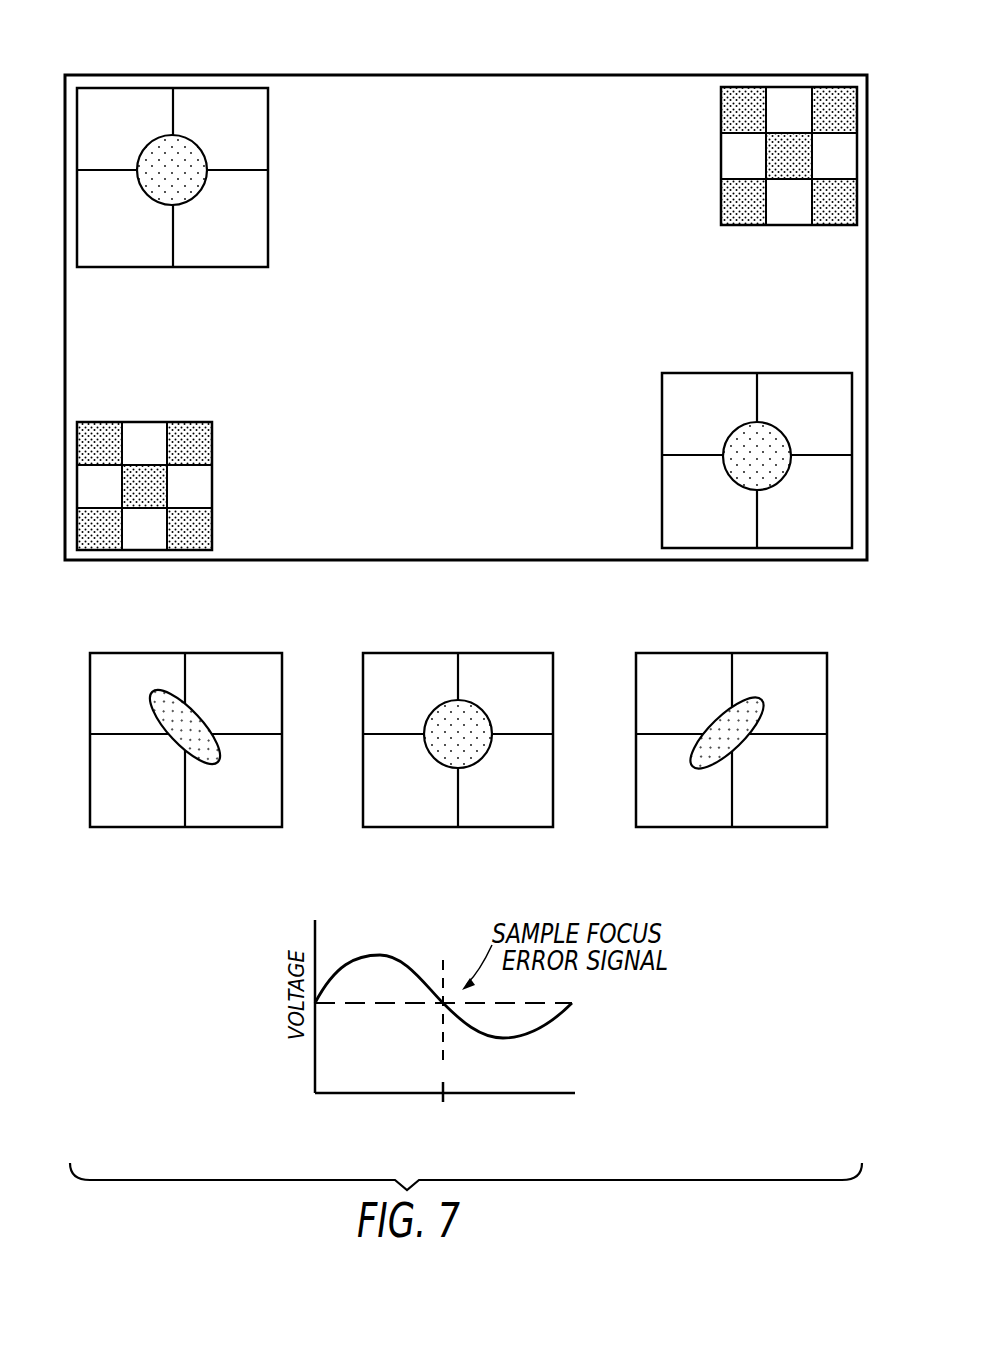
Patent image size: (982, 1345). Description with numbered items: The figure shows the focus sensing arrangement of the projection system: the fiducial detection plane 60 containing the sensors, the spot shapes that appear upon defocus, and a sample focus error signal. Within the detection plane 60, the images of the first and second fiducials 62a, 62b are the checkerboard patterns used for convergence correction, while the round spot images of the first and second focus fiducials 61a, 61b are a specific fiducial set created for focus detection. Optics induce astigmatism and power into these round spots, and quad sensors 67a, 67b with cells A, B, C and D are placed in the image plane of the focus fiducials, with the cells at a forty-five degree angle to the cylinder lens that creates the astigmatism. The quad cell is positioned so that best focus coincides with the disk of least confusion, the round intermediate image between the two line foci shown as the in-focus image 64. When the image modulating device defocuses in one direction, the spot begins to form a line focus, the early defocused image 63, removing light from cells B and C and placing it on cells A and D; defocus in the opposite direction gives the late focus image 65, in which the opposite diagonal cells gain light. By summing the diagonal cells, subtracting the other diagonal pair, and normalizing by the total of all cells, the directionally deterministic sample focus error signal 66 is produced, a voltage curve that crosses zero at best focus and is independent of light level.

The detector array / display screen 60 is at (520, 75).
The image of focus fiducial 1 61a is at (207, 160).
The image of focus fiducial 2 61b is at (722, 465).
The image of fiducial 1 62a is at (212, 477).
The image of fiducial 2 62b is at (721, 190).
The quad sensor 67a is at (268, 212).
The quad sensor 67b is at (662, 432).
The early defocused image of focus fiducial 63 is at (167, 838).
The in focus image of focus fiducial 64 is at (442, 838).
The late focus image of focus fiducial 65 is at (725, 838).
The sample focus error signal 66 is at (443, 1100).